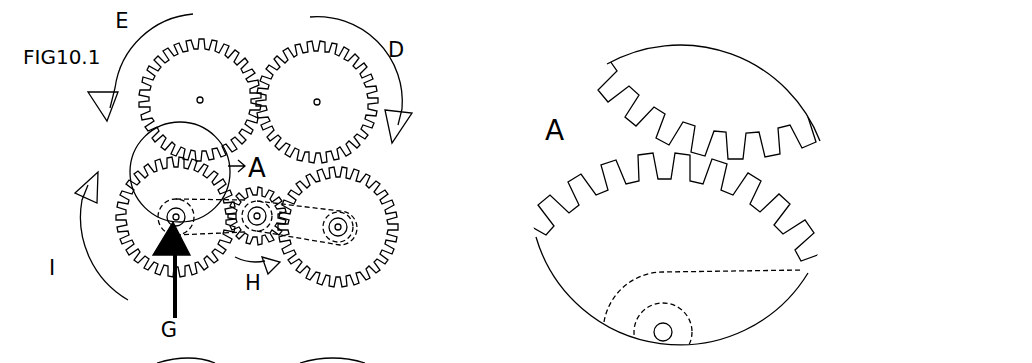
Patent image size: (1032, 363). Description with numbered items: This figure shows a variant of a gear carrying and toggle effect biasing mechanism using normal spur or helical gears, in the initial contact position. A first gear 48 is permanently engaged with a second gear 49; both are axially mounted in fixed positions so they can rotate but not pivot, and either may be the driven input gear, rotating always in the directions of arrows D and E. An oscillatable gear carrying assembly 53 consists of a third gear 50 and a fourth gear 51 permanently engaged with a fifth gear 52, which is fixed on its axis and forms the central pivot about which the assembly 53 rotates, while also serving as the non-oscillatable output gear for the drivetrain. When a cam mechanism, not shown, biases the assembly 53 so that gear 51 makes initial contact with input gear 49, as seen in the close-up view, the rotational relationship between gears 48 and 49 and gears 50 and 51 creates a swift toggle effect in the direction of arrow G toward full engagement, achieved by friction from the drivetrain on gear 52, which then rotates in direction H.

The first gear 48 is at (317, 102).
The second gear 49 is at (529, 80).
The third gear 50 is at (338, 227).
The fourth gear 51 is at (480, 258).
The fifth gear 52 is at (258, 217).
The oscillatable gear carrying assembly 53 is at (327, 218).